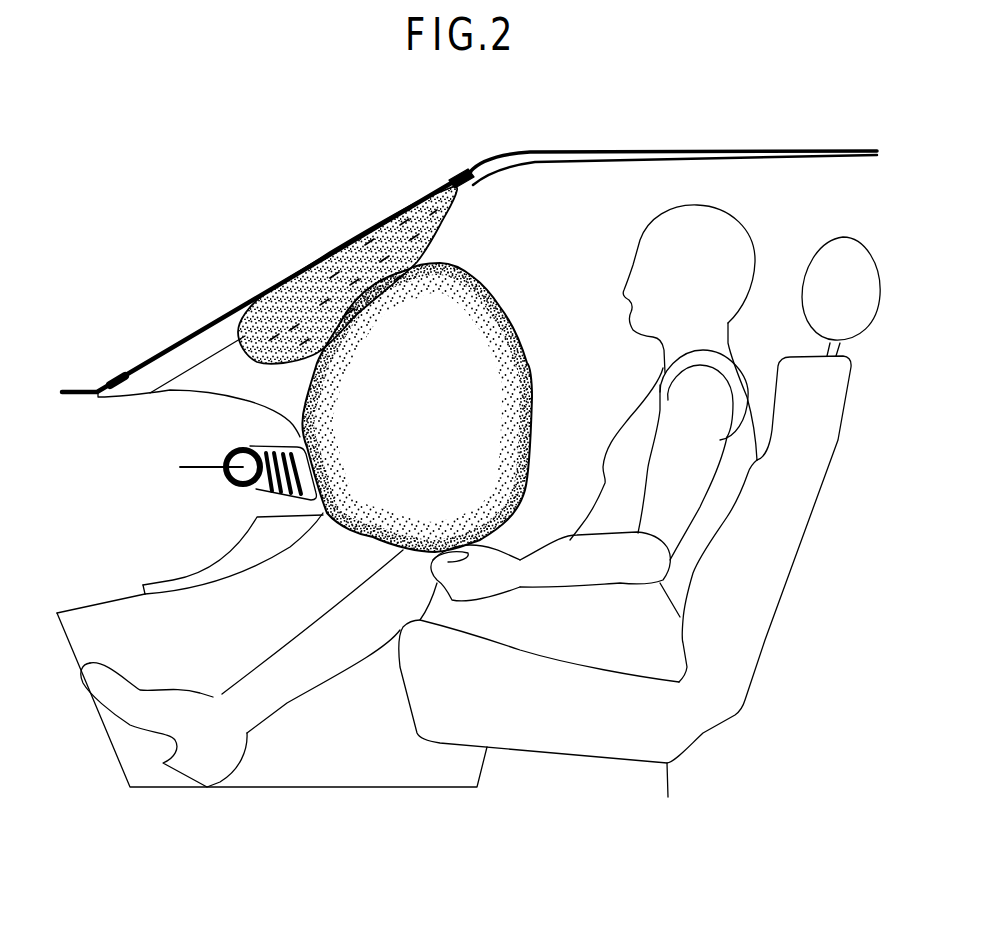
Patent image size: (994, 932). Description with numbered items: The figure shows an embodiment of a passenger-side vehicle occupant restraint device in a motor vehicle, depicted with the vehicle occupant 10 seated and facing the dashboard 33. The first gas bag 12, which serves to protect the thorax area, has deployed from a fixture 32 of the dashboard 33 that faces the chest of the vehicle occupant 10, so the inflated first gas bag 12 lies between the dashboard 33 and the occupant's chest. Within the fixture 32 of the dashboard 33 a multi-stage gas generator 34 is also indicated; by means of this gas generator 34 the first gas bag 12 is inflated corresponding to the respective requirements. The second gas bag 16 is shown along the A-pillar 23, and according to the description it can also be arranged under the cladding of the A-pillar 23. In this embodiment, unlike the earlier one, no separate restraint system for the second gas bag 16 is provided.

The vehicle occupant 10 is at (725, 257).
The first gas bag 12 is at (500, 347).
The second gas bag 16 is at (327, 265).
The A-pillar 23 is at (193, 378).
The fixture 32 is at (295, 505).
The dashboard 33 is at (253, 407).
The multi-stage gas generator 34 is at (243, 470).